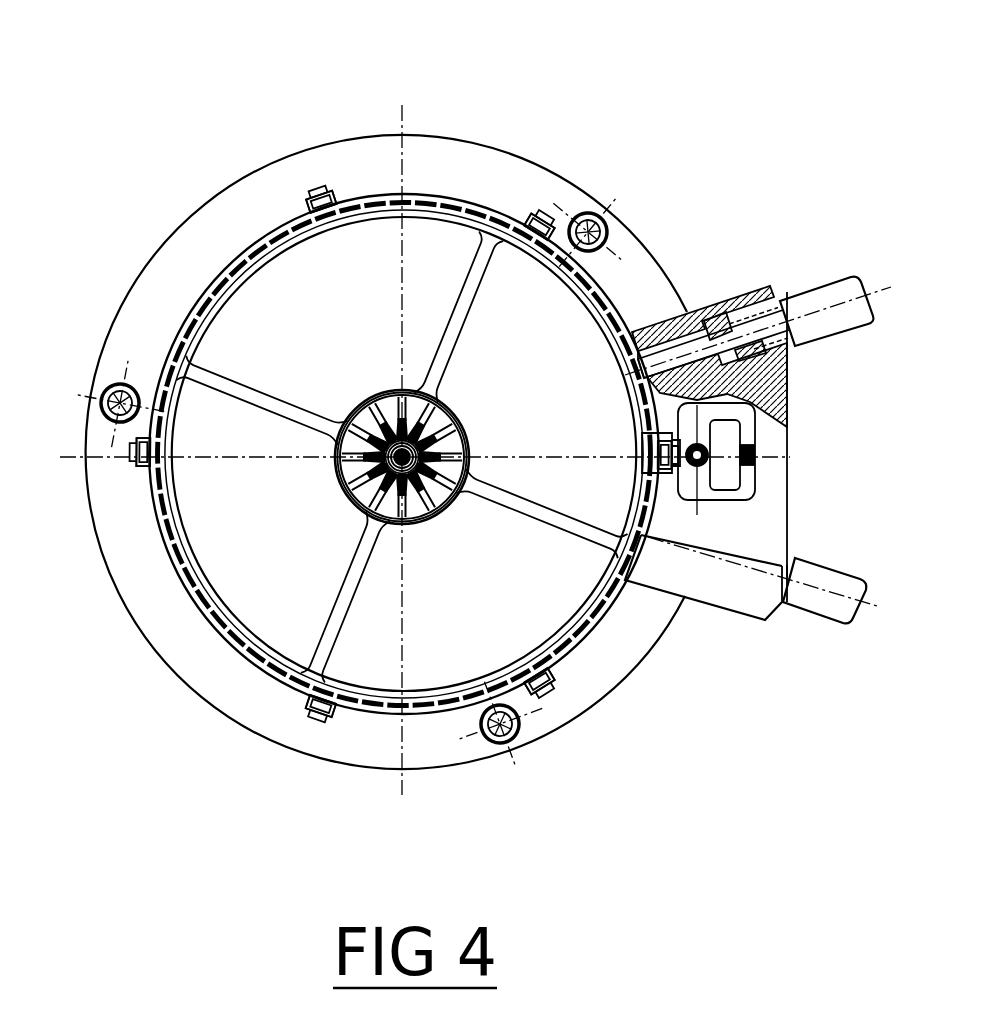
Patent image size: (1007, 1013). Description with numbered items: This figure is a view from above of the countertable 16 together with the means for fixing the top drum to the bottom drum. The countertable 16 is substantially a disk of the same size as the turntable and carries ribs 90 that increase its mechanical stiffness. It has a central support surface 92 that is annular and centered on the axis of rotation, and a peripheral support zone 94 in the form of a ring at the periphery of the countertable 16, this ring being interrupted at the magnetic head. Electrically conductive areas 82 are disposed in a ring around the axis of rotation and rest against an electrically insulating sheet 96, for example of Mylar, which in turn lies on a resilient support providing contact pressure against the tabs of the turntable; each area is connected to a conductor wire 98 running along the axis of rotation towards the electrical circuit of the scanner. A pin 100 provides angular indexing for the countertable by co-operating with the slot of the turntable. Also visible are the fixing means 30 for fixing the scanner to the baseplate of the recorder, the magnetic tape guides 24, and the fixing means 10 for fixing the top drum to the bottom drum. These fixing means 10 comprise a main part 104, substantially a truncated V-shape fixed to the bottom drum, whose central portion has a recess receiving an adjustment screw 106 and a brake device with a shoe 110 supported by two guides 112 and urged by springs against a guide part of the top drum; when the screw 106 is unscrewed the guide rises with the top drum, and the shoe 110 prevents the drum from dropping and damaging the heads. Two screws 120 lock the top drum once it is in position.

The fixing means 10 is at (725, 288).
The countertable 16 is at (270, 547).
The magnetic tape guides 24 is at (303, 207).
The fixing means 30 is at (600, 212).
The electrically conductive areas 82 is at (336, 452).
The ribs 90 is at (464, 318).
The central support surface 92 is at (378, 394).
The peripheral support zone 94 is at (493, 230).
The electrically insulating sheet 96 is at (427, 505).
The conductor wire 98 is at (343, 494).
The pin 100 is at (622, 545).
The main part 104 is at (727, 543).
The adjustment screw 106 is at (688, 450).
The shoe 110 is at (727, 468).
The guides 112 is at (758, 452).
The screws 120 is at (823, 300).